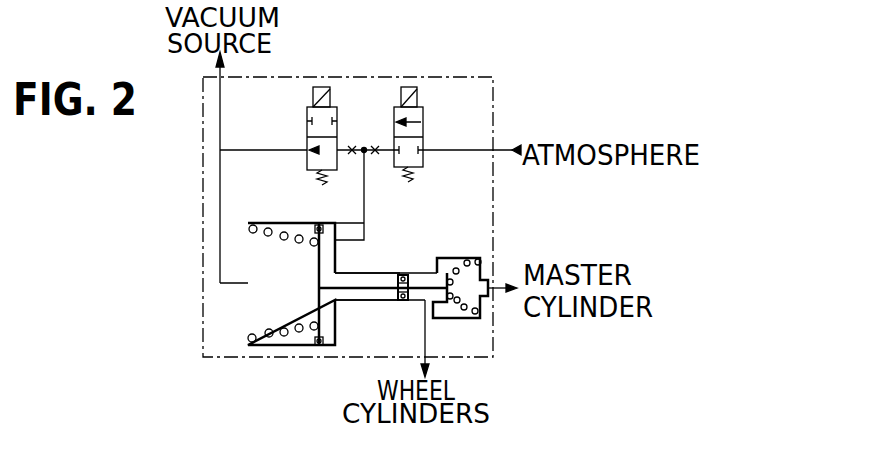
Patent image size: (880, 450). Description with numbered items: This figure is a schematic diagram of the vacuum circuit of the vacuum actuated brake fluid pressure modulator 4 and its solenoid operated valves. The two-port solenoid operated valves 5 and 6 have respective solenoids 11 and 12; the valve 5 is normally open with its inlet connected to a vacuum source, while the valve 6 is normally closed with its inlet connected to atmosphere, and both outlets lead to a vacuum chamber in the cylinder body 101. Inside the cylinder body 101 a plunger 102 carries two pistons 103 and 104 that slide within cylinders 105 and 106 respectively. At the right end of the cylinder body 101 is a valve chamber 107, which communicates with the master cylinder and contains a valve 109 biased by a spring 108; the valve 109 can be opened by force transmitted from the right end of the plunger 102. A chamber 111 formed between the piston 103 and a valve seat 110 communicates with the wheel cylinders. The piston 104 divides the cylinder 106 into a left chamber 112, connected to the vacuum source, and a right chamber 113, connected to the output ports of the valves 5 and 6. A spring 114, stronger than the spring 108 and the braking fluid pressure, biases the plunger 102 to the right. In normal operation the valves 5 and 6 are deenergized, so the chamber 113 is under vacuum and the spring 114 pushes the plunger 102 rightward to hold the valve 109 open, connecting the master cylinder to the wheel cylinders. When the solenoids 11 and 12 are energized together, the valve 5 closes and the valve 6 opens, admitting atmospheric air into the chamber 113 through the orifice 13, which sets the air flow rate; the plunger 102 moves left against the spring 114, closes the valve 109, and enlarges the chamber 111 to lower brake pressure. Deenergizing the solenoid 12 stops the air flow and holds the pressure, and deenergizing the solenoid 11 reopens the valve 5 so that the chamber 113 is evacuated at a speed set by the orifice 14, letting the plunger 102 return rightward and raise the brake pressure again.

The modulator 4 is at (204, 177).
The solenoid operated valve 5 is at (307, 112).
The solenoid operated valve 6 is at (424, 112).
The solenoid 11 is at (326, 98).
The solenoid 12 is at (414, 96).
The orifice 13 is at (375, 147).
The orifice 14 is at (352, 148).
The cylinder body 101 is at (356, 223).
The plunger 102 is at (355, 286).
The piston 103 is at (396, 298).
The piston 104 is at (319, 275).
The cylinder 105 is at (341, 302).
The cylinder 106 is at (268, 223).
The valve chamber 107 is at (472, 295).
The spring 108 is at (466, 260).
The valve 109 is at (440, 269).
The valve seat 110 is at (440, 303).
The chamber 111 is at (418, 274).
The chamber 112 is at (298, 320).
The chamber 113 is at (328, 318).
The spring 114 is at (267, 340).